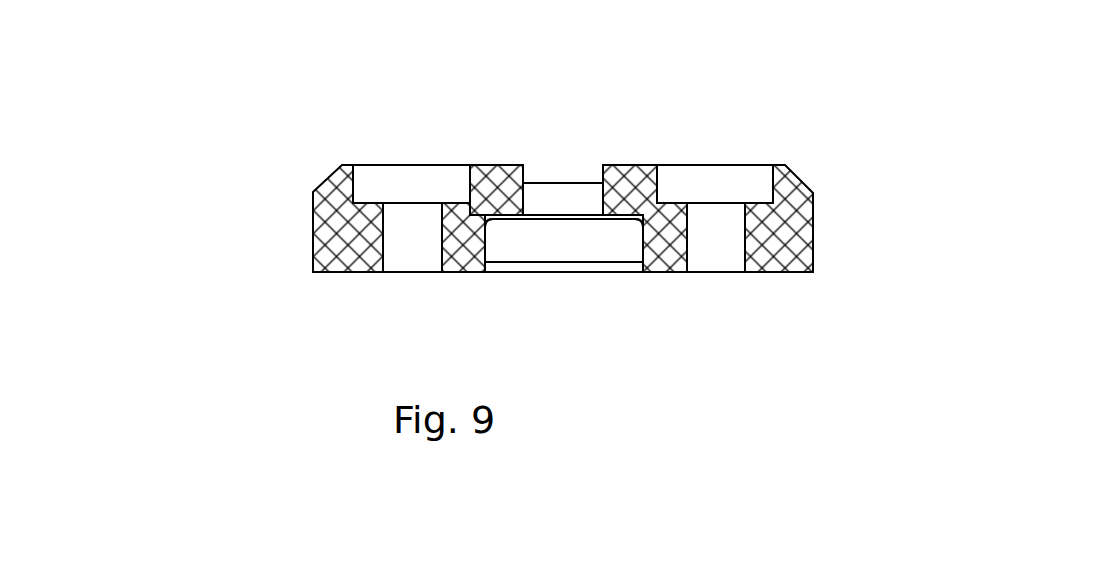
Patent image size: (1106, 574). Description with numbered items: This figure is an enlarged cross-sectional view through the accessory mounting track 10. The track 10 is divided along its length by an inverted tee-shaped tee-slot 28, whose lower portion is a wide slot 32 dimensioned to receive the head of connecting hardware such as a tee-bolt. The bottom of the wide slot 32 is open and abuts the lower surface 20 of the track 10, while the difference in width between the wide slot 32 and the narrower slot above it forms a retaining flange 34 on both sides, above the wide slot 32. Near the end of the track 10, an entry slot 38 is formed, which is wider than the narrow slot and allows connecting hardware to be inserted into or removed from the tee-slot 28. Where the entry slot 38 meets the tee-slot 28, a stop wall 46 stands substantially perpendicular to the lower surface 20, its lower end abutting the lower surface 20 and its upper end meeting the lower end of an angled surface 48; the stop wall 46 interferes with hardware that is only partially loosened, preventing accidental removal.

The track 10 is at (808, 120).
The lower surface 20 is at (778, 273).
The tee-slot 28 is at (523, 160).
The wide slot 32 is at (582, 273).
The retaining flange 34 is at (488, 220).
The entry slot 38 is at (563, 162).
The stop wall 46 is at (533, 245).
The angled surface 48 is at (557, 198).